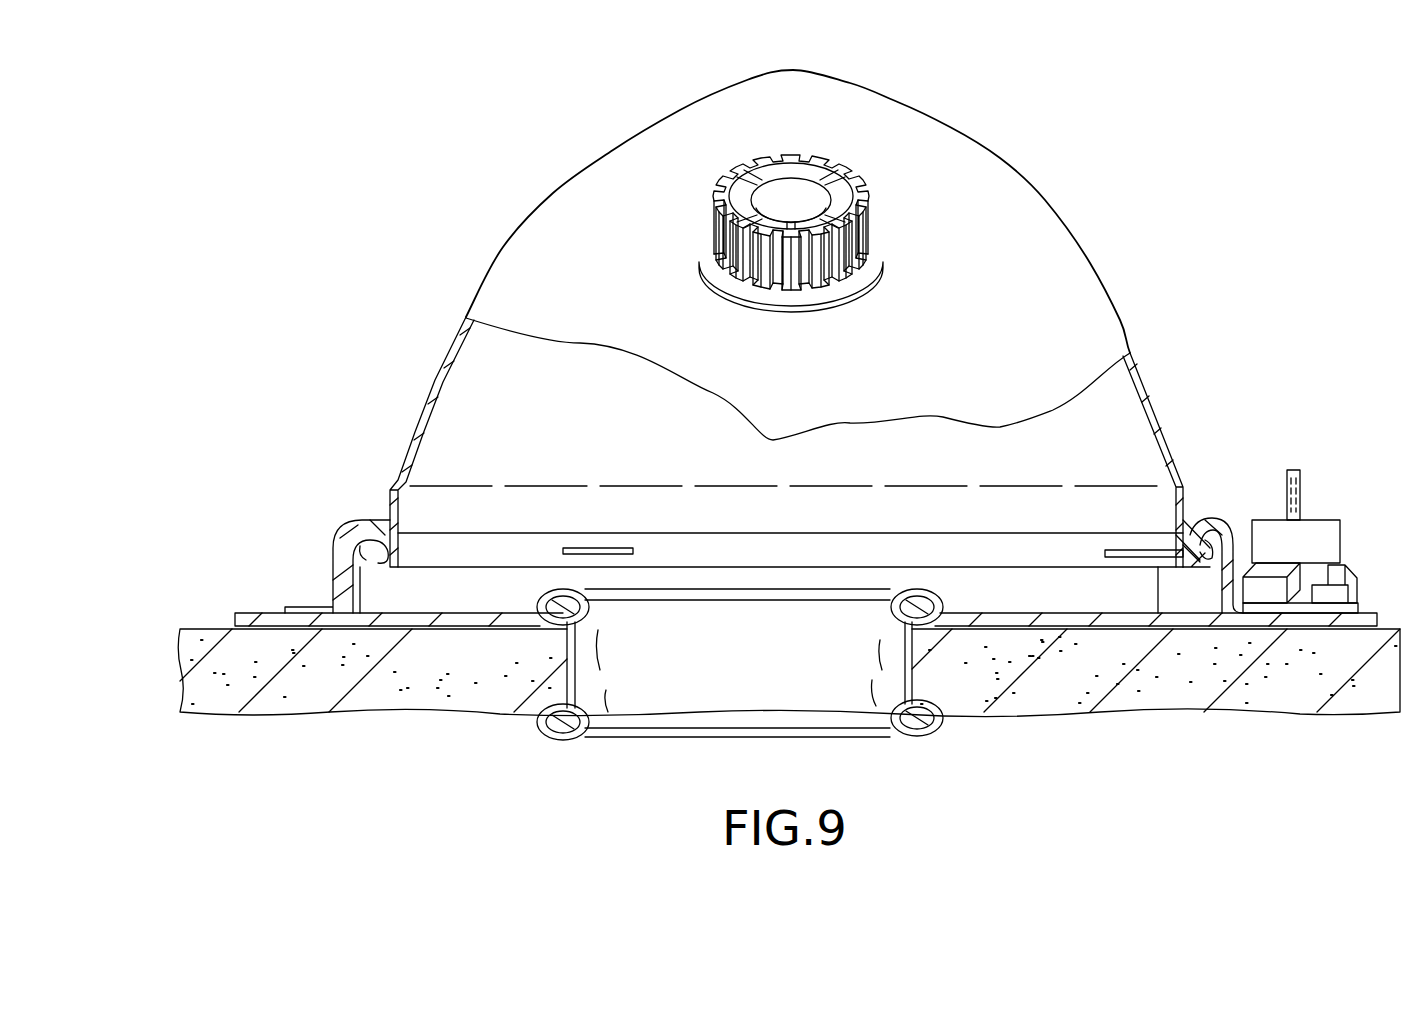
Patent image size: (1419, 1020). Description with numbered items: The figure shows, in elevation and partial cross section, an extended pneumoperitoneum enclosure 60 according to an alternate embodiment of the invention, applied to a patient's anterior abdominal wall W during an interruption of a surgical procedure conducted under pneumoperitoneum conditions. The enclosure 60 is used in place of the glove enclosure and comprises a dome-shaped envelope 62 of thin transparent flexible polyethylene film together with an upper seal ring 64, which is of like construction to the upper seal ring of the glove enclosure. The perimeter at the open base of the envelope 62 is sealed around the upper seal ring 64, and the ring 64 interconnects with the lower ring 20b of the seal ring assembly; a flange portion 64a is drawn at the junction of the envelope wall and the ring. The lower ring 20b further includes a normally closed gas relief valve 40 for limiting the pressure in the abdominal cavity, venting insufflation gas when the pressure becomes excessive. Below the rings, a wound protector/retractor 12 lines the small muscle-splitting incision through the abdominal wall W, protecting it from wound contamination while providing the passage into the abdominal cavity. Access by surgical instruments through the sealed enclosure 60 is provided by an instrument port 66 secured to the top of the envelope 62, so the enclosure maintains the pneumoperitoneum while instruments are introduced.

The wound protector/retractor 12 is at (635, 705).
The lower ring 20b is at (1232, 510).
The gas relief valve 40 is at (1355, 525).
The extended pneumoperitoneum enclosure 60 is at (786, 318).
The dome-shaped envelope 62 is at (1057, 277).
The upper seal ring 64 is at (1160, 572).
The frame flange 64a is at (1194, 497).
The instrument port 66 is at (873, 178).
The anterior abdominal wall W is at (393, 705).